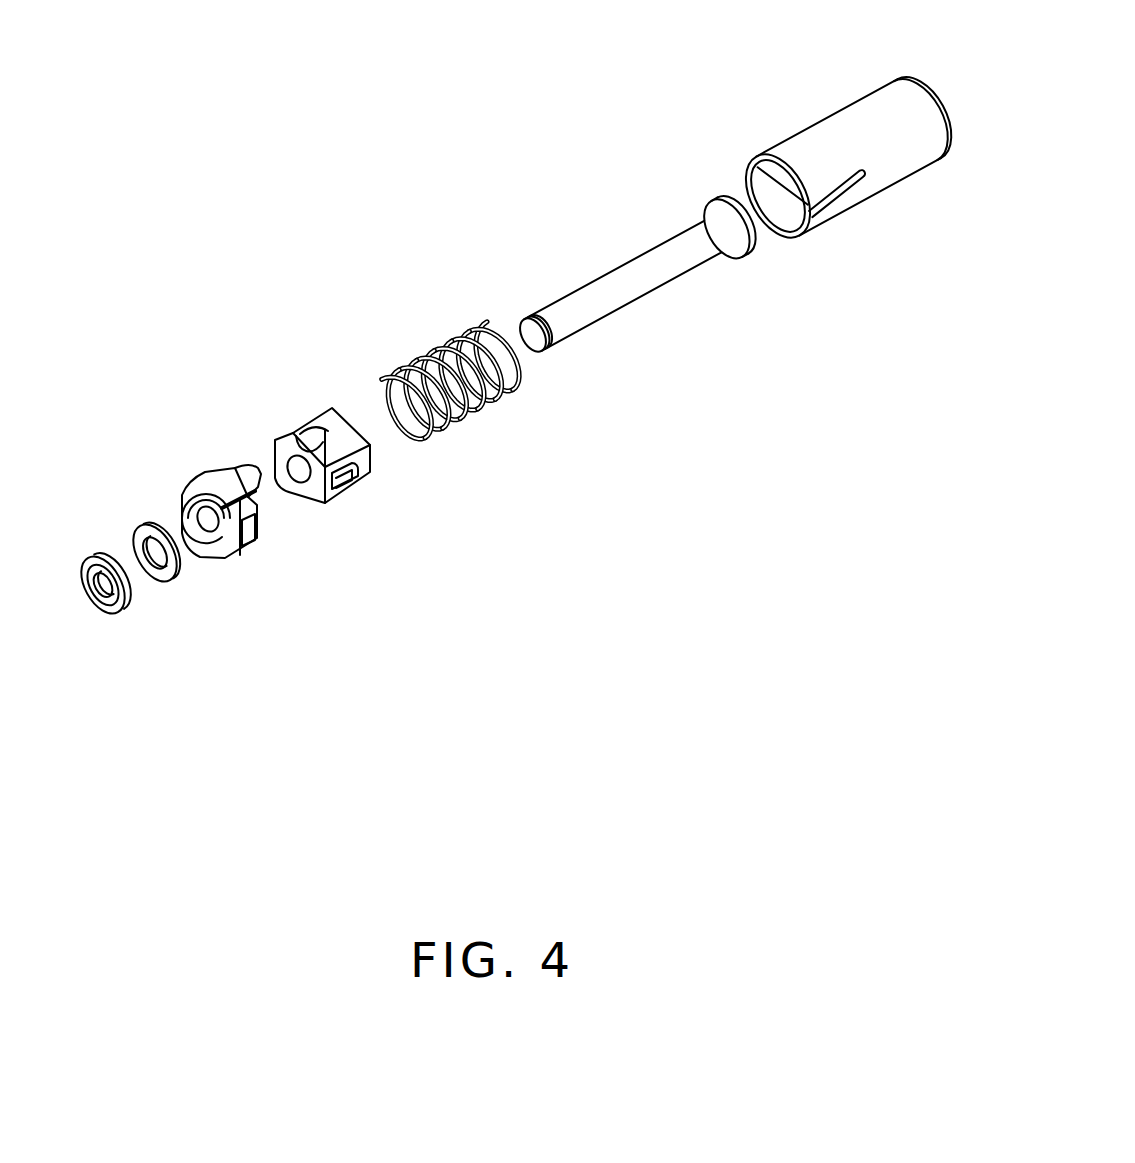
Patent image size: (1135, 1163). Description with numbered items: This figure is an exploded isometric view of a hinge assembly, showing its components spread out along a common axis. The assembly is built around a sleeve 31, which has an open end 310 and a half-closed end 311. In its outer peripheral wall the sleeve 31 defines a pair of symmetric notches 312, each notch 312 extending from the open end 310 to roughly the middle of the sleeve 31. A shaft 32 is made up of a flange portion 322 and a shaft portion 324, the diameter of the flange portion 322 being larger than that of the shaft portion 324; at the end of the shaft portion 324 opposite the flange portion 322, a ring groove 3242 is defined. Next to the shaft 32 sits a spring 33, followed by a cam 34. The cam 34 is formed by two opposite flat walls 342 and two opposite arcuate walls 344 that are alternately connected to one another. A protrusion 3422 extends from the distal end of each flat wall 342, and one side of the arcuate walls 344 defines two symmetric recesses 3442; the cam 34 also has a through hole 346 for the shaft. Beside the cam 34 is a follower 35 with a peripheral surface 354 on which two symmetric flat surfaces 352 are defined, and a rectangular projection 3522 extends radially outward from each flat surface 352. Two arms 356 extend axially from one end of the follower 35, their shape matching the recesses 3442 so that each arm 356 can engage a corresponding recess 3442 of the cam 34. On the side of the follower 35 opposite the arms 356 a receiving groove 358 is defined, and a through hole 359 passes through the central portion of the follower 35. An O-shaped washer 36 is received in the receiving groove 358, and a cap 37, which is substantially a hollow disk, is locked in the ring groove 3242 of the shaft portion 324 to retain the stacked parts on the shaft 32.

The sleeve 31 is at (845, 118).
The half-closed end 311 is at (940, 92).
The notch 312 is at (852, 183).
The open end 310 is at (773, 230).
The shaft 32 is at (616, 272).
The flange portion 322 is at (702, 213).
The shaft portion 324 is at (640, 260).
The ring groove 3242 is at (557, 340).
The spring 33 is at (425, 367).
The cam 34 is at (393, 452).
The flat wall 342 is at (365, 470).
The protrusion 3422 is at (384, 459).
The arcuate wall 344 is at (342, 425).
The recess 3442 is at (302, 447).
The through hole 346 is at (303, 477).
The follower 35 is at (230, 492).
The flat surface 352 is at (230, 557).
The rectangular projection 3522 is at (250, 547).
The peripheral surface 354 is at (208, 488).
The arm 356 is at (247, 473).
The receiving groove 358 is at (198, 550).
The through hole 359 is at (203, 517).
The washer 36 is at (143, 532).
The cap 37 is at (123, 595).